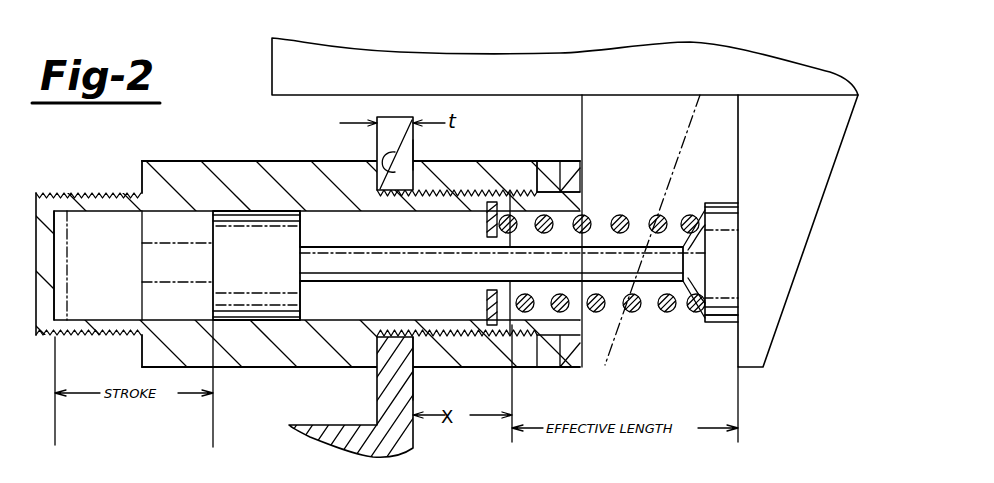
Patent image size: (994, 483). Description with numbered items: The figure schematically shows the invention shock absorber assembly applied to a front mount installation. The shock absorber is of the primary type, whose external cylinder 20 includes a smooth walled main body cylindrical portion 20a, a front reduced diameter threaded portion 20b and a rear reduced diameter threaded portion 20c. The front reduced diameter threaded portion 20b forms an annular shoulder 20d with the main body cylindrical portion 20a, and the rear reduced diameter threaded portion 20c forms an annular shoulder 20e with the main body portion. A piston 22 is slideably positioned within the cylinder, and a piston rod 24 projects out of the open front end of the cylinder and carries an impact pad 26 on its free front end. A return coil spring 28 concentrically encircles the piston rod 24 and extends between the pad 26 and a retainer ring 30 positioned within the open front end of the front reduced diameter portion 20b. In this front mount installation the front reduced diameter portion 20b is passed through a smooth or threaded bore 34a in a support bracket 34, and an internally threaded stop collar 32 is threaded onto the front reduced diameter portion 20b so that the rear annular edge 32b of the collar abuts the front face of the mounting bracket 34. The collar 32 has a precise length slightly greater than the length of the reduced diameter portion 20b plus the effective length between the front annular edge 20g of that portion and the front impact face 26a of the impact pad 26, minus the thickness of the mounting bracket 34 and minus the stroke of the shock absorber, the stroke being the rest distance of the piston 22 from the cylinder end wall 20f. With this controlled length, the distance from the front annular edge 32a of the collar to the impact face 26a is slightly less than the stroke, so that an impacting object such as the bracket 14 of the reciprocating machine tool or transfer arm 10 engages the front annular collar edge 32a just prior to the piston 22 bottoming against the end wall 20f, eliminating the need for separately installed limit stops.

The machine tool or transfer arm 10 is at (733, 14).
The bracket 14 is at (782, 330).
The external cylinder 20 is at (227, 138).
The main body cylindrical portion 20a is at (303, 125).
The front reduced diameter threaded portion 20b is at (480, 190).
The rear reduced diameter threaded portion 20c is at (72, 193).
The annular shoulder 20d is at (378, 150).
The annular shoulder 20e is at (142, 173).
The end wall 20f is at (55, 298).
The front annular edge 20g is at (512, 340).
The piston 22 is at (265, 279).
The piston rod 24 is at (356, 247).
The impact pad 26 is at (723, 237).
The impact surface 26a is at (738, 275).
The return coil spring 28 is at (650, 173).
The retainer ring 30 is at (487, 212).
The stop collar 32 is at (533, 152).
The front annular edge 32a is at (582, 173).
The rear annular edge 32b is at (413, 158).
The support bracket 34 is at (377, 387).
The bore 34a is at (415, 340).